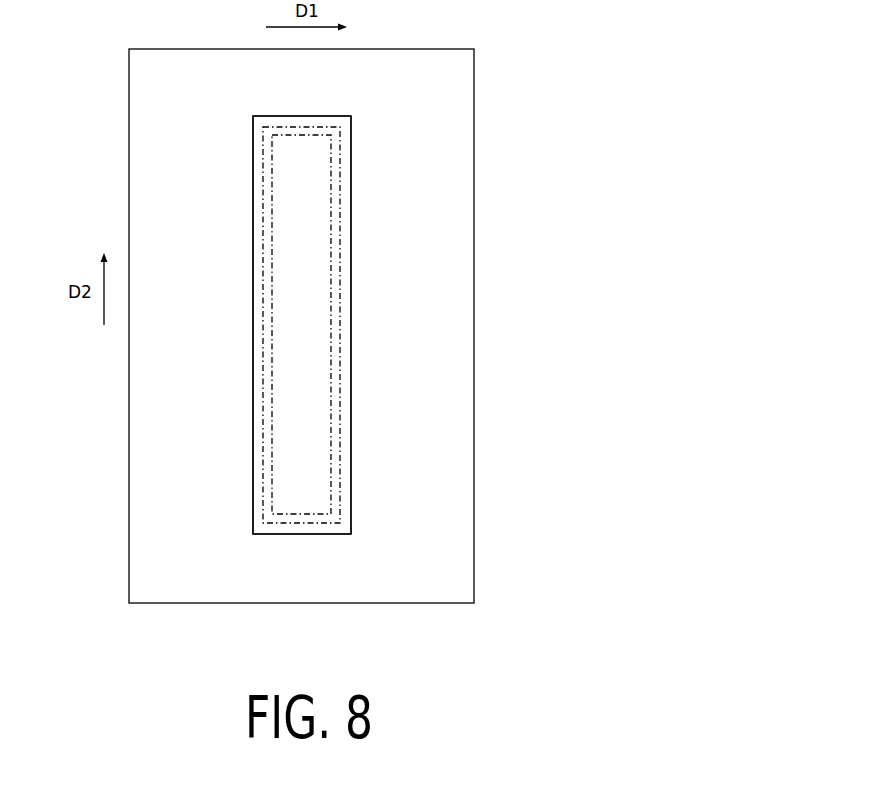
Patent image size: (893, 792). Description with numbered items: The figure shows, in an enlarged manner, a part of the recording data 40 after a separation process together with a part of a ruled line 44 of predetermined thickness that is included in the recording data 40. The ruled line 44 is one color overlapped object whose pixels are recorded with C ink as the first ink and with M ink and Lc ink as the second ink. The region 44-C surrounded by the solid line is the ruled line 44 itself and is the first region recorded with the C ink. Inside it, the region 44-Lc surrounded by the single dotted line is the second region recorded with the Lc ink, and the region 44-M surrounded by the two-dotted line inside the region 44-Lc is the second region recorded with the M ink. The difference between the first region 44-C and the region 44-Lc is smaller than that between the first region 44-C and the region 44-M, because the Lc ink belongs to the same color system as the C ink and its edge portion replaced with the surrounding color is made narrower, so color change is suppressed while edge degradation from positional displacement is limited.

The recording data 40 is at (425, 603).
The ruled line 44 is at (246, 415).
The first region 44-C is at (351, 163).
The second region for Lc ink 44-Lc is at (340, 250).
The second region for M ink 44-M is at (331, 337).